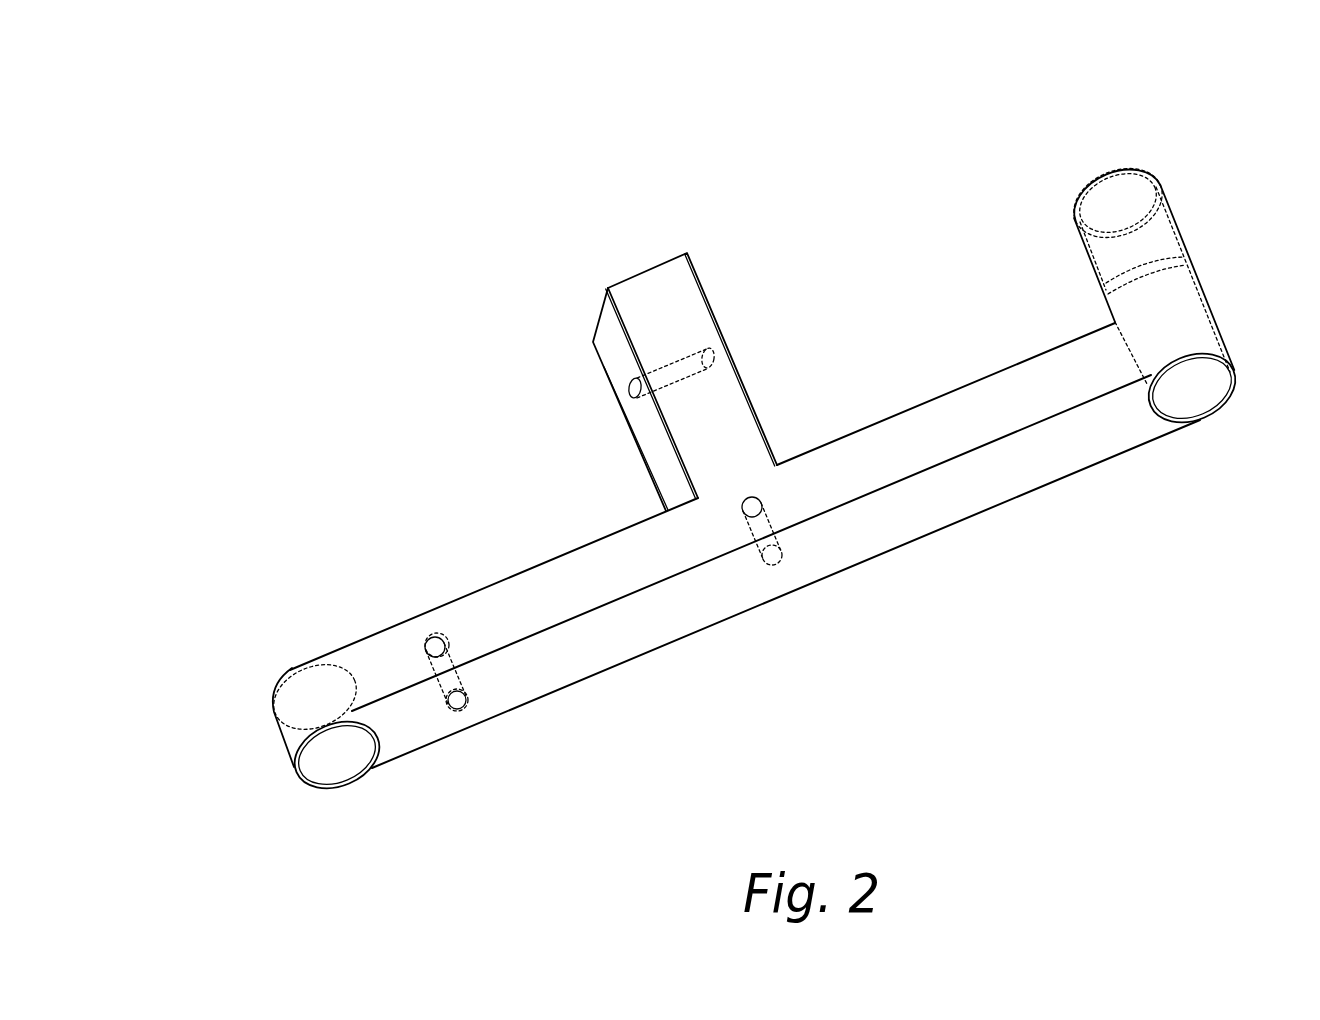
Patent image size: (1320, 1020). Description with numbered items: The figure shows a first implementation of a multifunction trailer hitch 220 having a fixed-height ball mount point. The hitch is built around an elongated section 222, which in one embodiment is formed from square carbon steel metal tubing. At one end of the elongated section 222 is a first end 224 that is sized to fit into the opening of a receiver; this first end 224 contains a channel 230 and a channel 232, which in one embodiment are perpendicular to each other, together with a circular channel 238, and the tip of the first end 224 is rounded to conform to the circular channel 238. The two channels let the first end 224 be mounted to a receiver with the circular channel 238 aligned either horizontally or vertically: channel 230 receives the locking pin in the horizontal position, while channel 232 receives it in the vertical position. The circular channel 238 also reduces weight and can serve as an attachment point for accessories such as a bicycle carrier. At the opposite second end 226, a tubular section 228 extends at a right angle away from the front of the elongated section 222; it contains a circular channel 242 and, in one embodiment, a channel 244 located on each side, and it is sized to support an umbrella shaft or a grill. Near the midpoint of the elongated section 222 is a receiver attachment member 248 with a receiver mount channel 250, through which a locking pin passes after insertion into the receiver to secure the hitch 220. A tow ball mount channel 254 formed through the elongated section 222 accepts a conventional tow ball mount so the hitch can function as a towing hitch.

The multifunction trailer hitch 220 is at (190, 78).
The elongated section 222 is at (745, 545).
The first end 224 is at (298, 732).
The second end 226 is at (1152, 315).
The tubular section 228 is at (1137, 158).
The channel 230 is at (460, 708).
The channel 232 is at (433, 637).
The circular channel 238 is at (318, 760).
The circular channel 242 is at (1182, 400).
The channel 244 is at (1100, 293).
The receiver attachment member 248 is at (705, 374).
The receiver mount channel 250 is at (632, 397).
The tow ball mount channel 254 is at (750, 512).